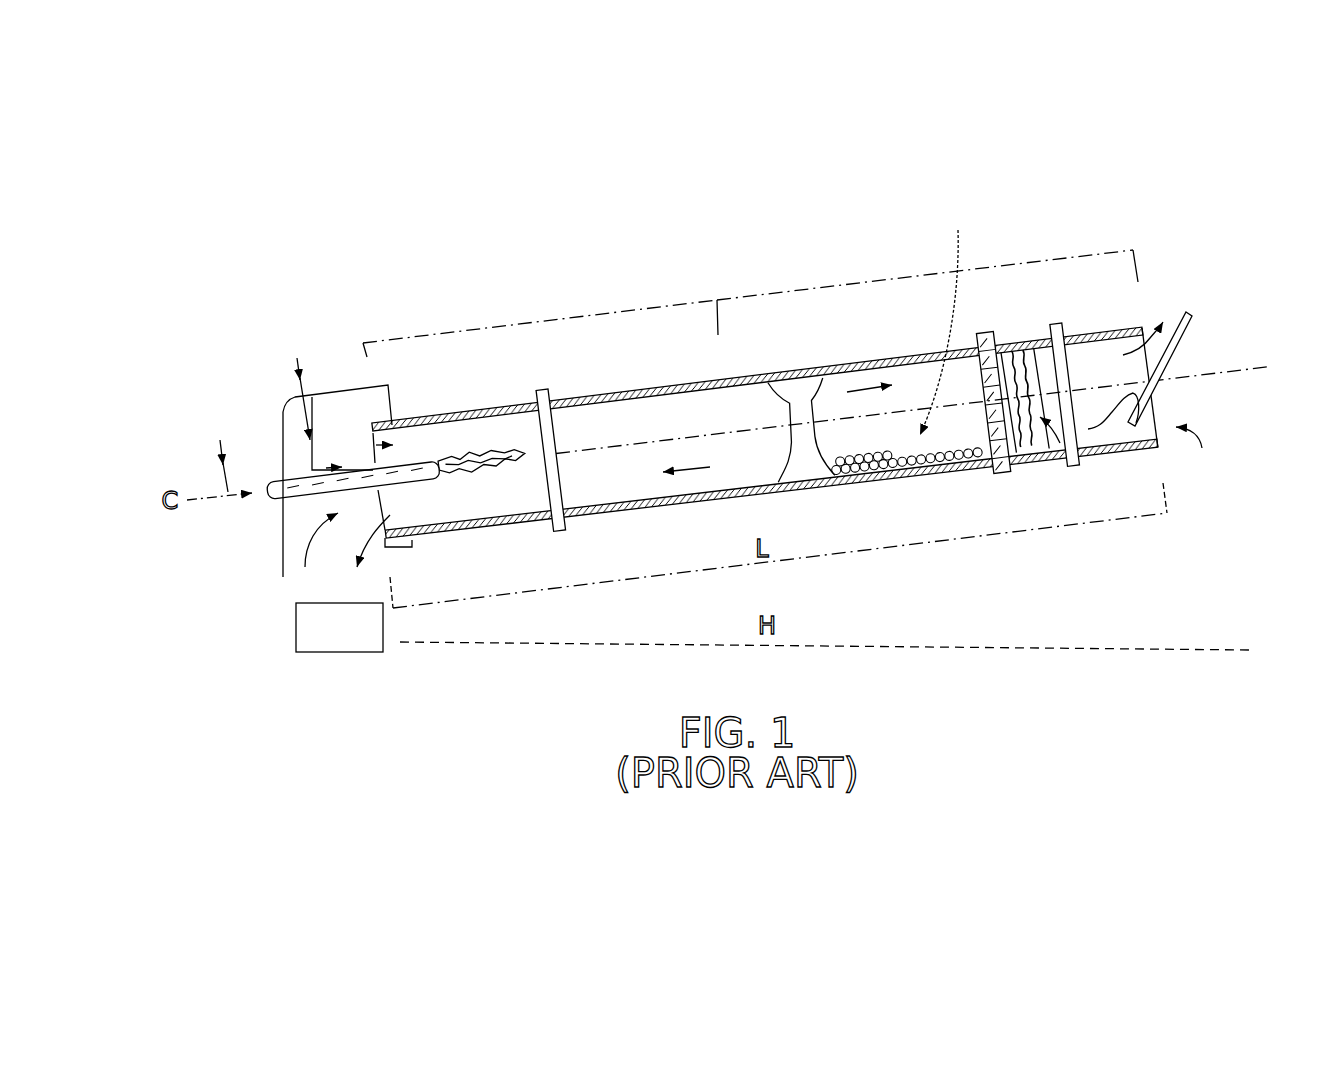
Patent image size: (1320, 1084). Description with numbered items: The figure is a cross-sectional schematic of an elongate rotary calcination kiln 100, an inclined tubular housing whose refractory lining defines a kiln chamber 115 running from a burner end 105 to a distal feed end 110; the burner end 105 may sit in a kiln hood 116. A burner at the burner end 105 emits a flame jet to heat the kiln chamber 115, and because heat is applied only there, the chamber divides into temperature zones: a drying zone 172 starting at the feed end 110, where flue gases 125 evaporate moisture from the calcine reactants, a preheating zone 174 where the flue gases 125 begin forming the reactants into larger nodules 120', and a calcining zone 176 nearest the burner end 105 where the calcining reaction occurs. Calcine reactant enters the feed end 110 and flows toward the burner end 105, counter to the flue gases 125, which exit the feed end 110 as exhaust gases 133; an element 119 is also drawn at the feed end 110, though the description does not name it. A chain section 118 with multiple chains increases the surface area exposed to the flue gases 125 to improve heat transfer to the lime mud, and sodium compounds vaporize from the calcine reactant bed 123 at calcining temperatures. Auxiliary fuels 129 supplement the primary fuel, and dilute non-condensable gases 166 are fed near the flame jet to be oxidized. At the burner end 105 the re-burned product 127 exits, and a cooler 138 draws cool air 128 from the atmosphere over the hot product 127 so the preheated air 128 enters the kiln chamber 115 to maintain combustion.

The elongate rotary calcination kiln 100 is at (278, 307).
The burner end 105 is at (378, 446).
The feed end 110 is at (1200, 452).
The kiln chamber 115 is at (913, 383).
The kiln hood 116 is at (338, 395).
The chain section 118 is at (1067, 460).
The exit rod 119 is at (1181, 351).
The nodules 120' is at (970, 494).
The calcine reactant bed 123 is at (953, 320).
The flue gases 125 is at (866, 363).
The re-burned product 127 is at (381, 577).
The cool air 128 is at (285, 555).
The auxiliary fuels 129 is at (220, 445).
The exhaust gases 133 is at (1150, 327).
The cooler 138 is at (318, 640).
The low-concentration high volume non-condensable gases 166 is at (296, 372).
The drying zone 172 is at (1070, 254).
The preheating zone 174 is at (910, 272).
The calcining zone 176 is at (570, 318).